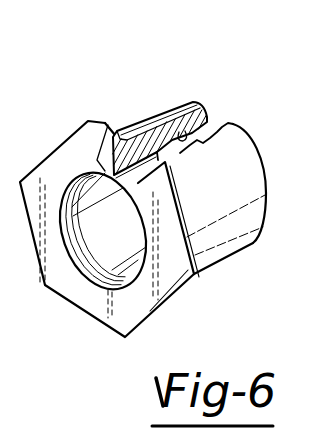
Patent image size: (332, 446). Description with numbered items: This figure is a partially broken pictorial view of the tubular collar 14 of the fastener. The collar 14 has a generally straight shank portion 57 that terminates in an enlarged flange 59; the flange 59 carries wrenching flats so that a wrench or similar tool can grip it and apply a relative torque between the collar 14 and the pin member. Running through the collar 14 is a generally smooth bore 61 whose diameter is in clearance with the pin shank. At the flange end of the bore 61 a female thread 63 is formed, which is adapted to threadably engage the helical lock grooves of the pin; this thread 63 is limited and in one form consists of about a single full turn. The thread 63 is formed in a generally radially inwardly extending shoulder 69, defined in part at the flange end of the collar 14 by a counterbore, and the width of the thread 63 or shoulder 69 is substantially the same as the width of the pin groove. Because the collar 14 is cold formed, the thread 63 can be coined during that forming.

The tubular collar 14 is at (167, 86).
The shank portion 57 is at (142, 121).
The flange 59 is at (153, 307).
The bore 61 is at (183, 136).
The female thread 63 is at (121, 190).
The shoulder 69 is at (110, 124).